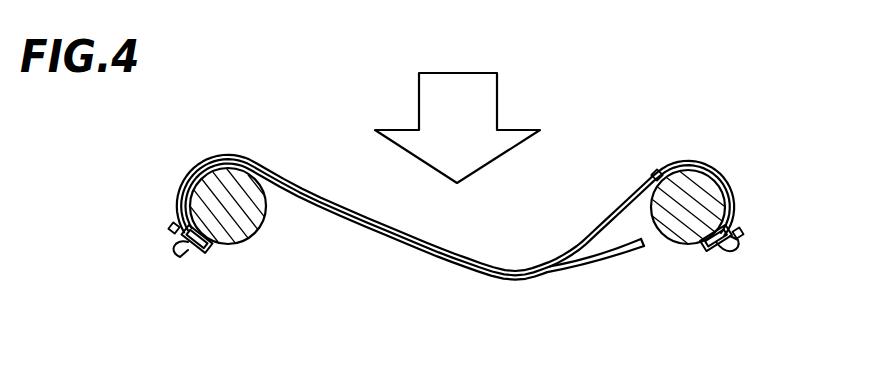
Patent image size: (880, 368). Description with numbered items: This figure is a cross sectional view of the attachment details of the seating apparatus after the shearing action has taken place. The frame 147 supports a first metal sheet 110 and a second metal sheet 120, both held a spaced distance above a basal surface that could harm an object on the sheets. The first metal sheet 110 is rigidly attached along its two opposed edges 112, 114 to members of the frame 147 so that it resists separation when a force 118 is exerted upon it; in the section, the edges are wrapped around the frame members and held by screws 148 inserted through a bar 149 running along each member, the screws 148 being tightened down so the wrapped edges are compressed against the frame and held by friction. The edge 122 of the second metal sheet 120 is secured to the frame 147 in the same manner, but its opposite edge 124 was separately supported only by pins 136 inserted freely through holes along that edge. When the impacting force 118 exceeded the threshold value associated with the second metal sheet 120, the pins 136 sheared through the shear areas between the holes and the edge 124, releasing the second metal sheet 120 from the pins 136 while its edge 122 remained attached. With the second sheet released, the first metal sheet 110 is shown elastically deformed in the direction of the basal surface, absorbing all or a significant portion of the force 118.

The first metal sheet 110 is at (492, 270).
The edge 112 is at (203, 260).
The edge 114 is at (698, 253).
The force 118 is at (419, 80).
The second metal sheet 120 is at (427, 273).
The edge 122 is at (208, 255).
The edge 124 is at (640, 244).
The pin 136 is at (657, 173).
The frame 147 is at (263, 216).
The screw 148 is at (172, 240).
The bar 149 is at (177, 228).